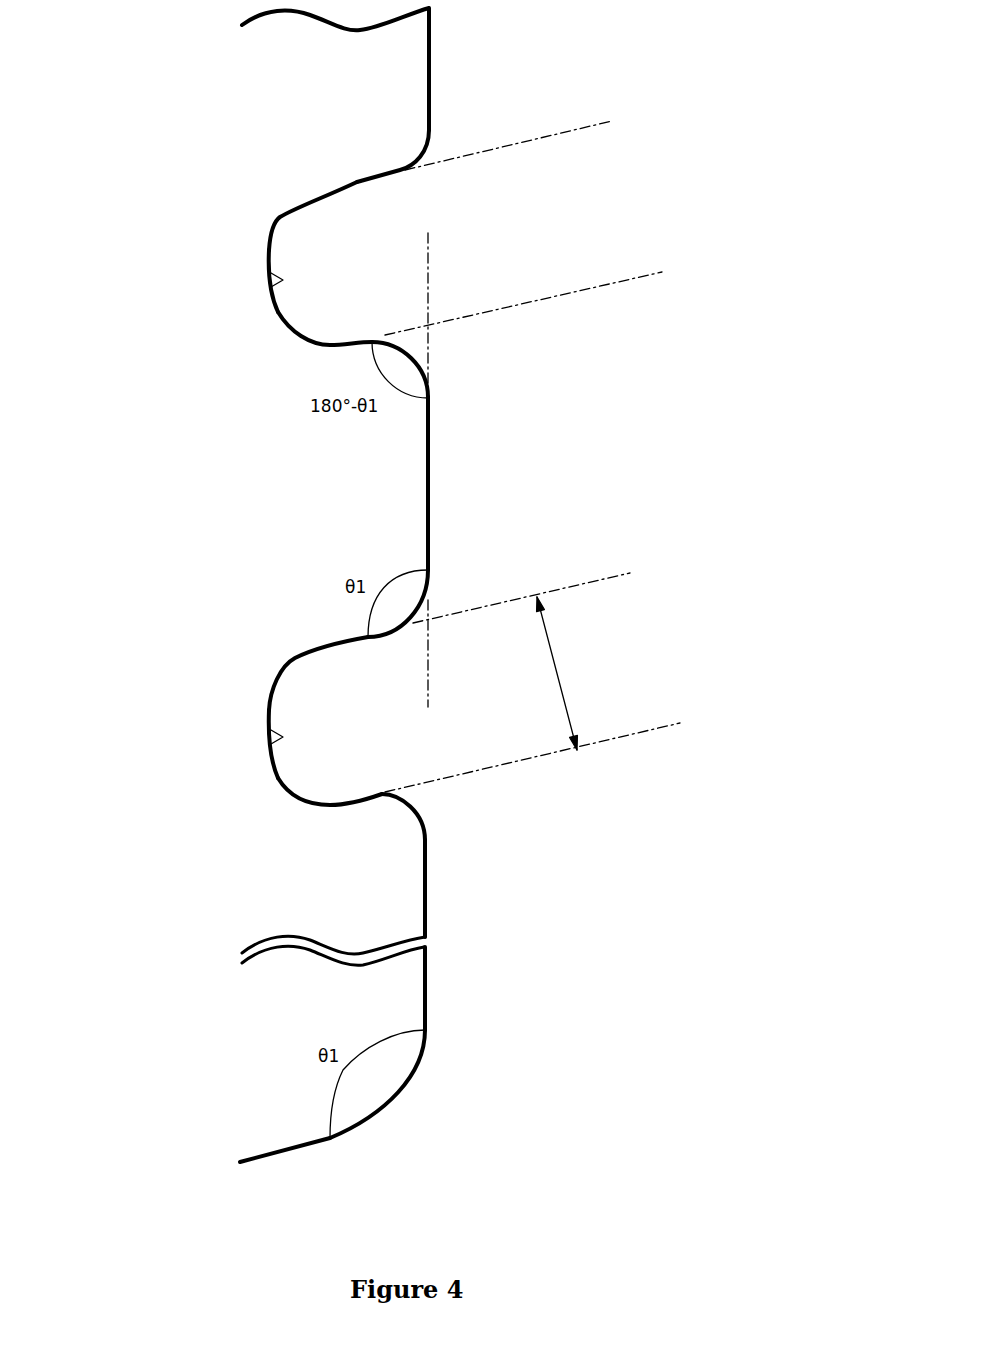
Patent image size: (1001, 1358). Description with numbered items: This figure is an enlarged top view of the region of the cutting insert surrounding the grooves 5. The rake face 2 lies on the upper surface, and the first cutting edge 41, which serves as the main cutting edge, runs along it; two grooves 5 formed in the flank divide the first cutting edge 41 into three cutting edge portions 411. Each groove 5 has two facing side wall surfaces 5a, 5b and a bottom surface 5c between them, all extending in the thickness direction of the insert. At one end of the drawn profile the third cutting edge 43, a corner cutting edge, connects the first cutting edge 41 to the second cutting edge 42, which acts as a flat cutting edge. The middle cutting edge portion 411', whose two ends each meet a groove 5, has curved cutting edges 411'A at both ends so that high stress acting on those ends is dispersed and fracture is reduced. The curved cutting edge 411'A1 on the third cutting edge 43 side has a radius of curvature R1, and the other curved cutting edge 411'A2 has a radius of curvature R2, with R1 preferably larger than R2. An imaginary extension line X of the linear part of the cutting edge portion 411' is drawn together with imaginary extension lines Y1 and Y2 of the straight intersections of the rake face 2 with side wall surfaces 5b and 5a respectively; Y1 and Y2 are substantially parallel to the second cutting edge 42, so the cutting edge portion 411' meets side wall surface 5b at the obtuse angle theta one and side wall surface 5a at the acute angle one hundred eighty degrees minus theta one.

The rake face 2 is at (372, 872).
The groove 5 is at (150, 256).
The side wall surface 5a is at (355, 342).
The side wall surface 5b is at (356, 183).
The bottom surface 5c is at (268, 290).
The first cutting edge 41 is at (427, 993).
The second cutting edge 42 is at (292, 1150).
The third cutting edge 43 is at (405, 1090).
The cutting edge portion 411 is at (417, 472).
The cutting edge portion 411' is at (519, 483).
The curved cutting edge 411'A is at (483, 461).
The curved cutting edge 411'A1 is at (478, 575).
The curved cutting edge 411'A2 is at (516, 373).
The imaginary extension line X is at (430, 258).
The imaginary extension line Y1 is at (583, 128).
The imaginary extension line Y2 is at (587, 290).
The radius of curvature R1 is at (418, 612).
The radius of curvature R2 is at (421, 373).